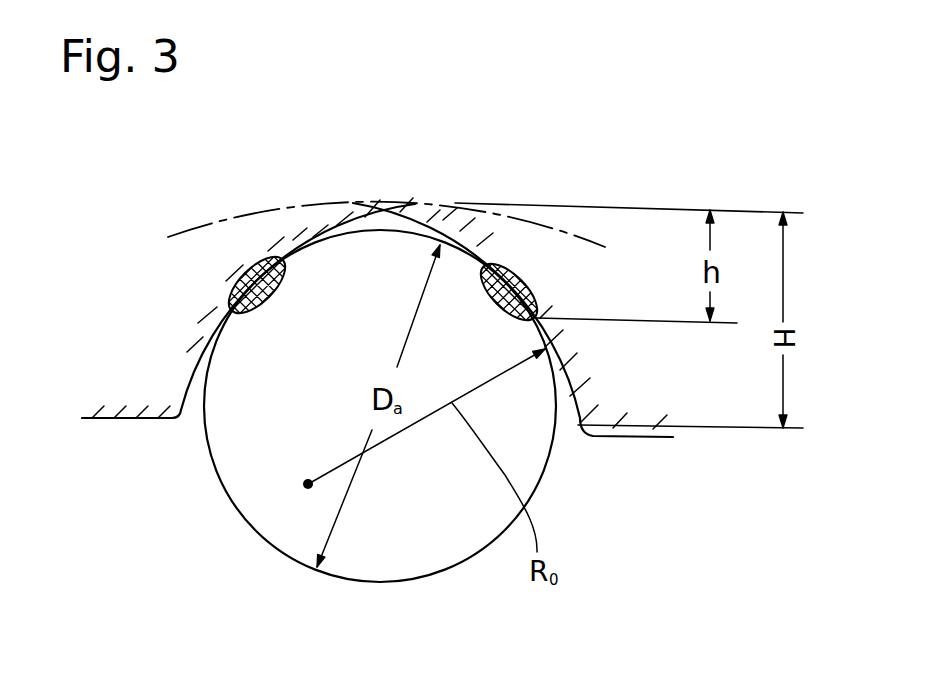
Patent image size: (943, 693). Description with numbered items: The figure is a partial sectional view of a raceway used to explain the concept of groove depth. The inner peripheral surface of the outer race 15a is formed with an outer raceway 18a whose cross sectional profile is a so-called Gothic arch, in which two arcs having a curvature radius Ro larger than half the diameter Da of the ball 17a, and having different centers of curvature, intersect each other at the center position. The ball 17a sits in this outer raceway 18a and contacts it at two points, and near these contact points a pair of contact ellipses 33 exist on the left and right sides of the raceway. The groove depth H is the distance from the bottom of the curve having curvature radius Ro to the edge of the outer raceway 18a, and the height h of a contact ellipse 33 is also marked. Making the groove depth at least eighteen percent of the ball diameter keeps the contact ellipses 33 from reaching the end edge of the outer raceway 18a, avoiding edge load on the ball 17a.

The contact ellipses 33 is at (239, 262).
The outer raceway 18a is at (205, 350).
The balls 17a is at (268, 518).
The outer race 15a is at (612, 408).